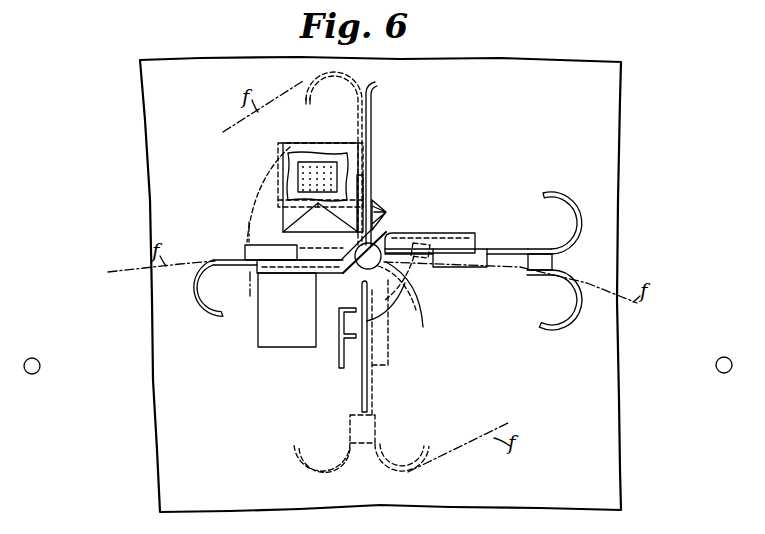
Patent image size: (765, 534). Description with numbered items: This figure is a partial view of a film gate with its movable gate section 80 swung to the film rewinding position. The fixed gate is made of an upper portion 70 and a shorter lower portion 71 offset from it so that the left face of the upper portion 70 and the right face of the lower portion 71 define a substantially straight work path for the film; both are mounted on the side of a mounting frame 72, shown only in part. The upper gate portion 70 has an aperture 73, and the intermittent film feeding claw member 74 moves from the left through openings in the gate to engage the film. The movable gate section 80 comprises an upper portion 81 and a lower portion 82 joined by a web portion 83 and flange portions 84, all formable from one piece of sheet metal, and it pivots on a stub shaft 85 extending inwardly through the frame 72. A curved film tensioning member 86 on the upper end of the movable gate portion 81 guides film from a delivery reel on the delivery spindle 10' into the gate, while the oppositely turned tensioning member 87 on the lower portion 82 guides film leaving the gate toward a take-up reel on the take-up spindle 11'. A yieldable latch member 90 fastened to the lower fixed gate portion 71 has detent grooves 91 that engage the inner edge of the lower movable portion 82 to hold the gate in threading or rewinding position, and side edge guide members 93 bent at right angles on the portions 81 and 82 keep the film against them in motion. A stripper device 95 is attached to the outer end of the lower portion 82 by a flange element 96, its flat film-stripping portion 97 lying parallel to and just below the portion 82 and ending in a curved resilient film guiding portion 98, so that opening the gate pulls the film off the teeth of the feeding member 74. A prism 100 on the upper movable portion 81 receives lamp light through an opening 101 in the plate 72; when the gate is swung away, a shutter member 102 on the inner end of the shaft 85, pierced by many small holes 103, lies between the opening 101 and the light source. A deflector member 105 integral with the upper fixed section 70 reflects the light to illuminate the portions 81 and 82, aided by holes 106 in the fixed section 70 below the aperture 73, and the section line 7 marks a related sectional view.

The section line 7- 7 is at (247, 231).
The delivery spindle 10' is at (29, 352).
The take-up spindle 11' is at (730, 353).
The upper portion of fixed gate section 70 is at (371, 140).
The lower portion of fixed gate section 71 is at (373, 380).
The mounting frame 72 is at (608, 432).
The aperture 73 is at (372, 178).
The film feeding claw member 74 is at (341, 339).
The movable gate section 80 is at (502, 248).
The upper portion of movable gate section 81 is at (225, 263).
The lower portion of movable gate section 82 is at (523, 250).
The web portion 83 is at (354, 275).
The flange portions 84 is at (330, 275).
The stub shaft 85 is at (414, 318).
The curved film tensioning member 86 is at (343, 72).
The curved film tensioning member 87 is at (560, 198).
The yieldable latch member 90 is at (412, 299).
The detent grooves 91 is at (428, 281).
The side edge guide member 93 is at (245, 252).
The stripper device 95 is at (559, 283).
The flange element 96 is at (552, 259).
The film-stripping portion 97 is at (537, 276).
The curved resilient film guiding portion 98 is at (567, 322).
The prism 100 is at (269, 342).
The opening 101 is at (290, 167).
The light deflecting shield or shutter member 102 is at (257, 191).
The small holes 103 is at (331, 190).
The deflector member 105 is at (290, 213).
The holes 106 is at (380, 209).